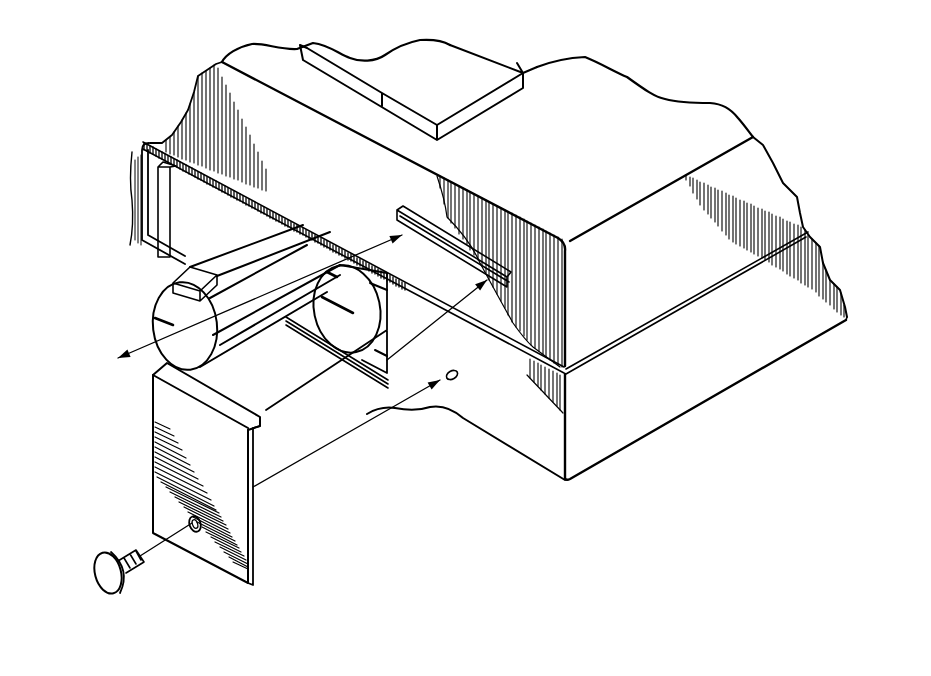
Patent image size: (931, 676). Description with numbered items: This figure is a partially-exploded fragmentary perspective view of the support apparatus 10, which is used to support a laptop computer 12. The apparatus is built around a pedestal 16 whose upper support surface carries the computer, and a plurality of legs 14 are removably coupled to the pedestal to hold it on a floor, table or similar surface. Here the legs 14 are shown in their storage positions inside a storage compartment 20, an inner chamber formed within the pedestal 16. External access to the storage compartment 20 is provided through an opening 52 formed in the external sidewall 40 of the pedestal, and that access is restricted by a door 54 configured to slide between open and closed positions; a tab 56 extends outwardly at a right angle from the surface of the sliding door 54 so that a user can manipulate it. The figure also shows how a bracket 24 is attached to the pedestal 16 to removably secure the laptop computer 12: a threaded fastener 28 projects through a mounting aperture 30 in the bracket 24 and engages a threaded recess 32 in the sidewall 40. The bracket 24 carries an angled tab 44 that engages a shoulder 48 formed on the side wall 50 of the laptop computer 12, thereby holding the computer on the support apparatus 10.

The support apparatus 10 is at (171, 96).
The laptop computer 12 is at (753, 187).
The legs 14 is at (270, 187).
The pedestal 16 is at (687, 370).
The storage compartment 20 is at (378, 358).
The bracket 24 is at (172, 405).
The threaded fastener 28 is at (110, 582).
The mounting aperture 30 is at (195, 532).
The threaded recess 32 is at (459, 374).
The sidewall 40 is at (521, 421).
The angled tab 44 is at (220, 403).
The shoulder 48 is at (436, 226).
The side wall 50 is at (373, 205).
The opening 52 is at (330, 331).
The door 54 is at (153, 183).
The tab 56 is at (167, 229).